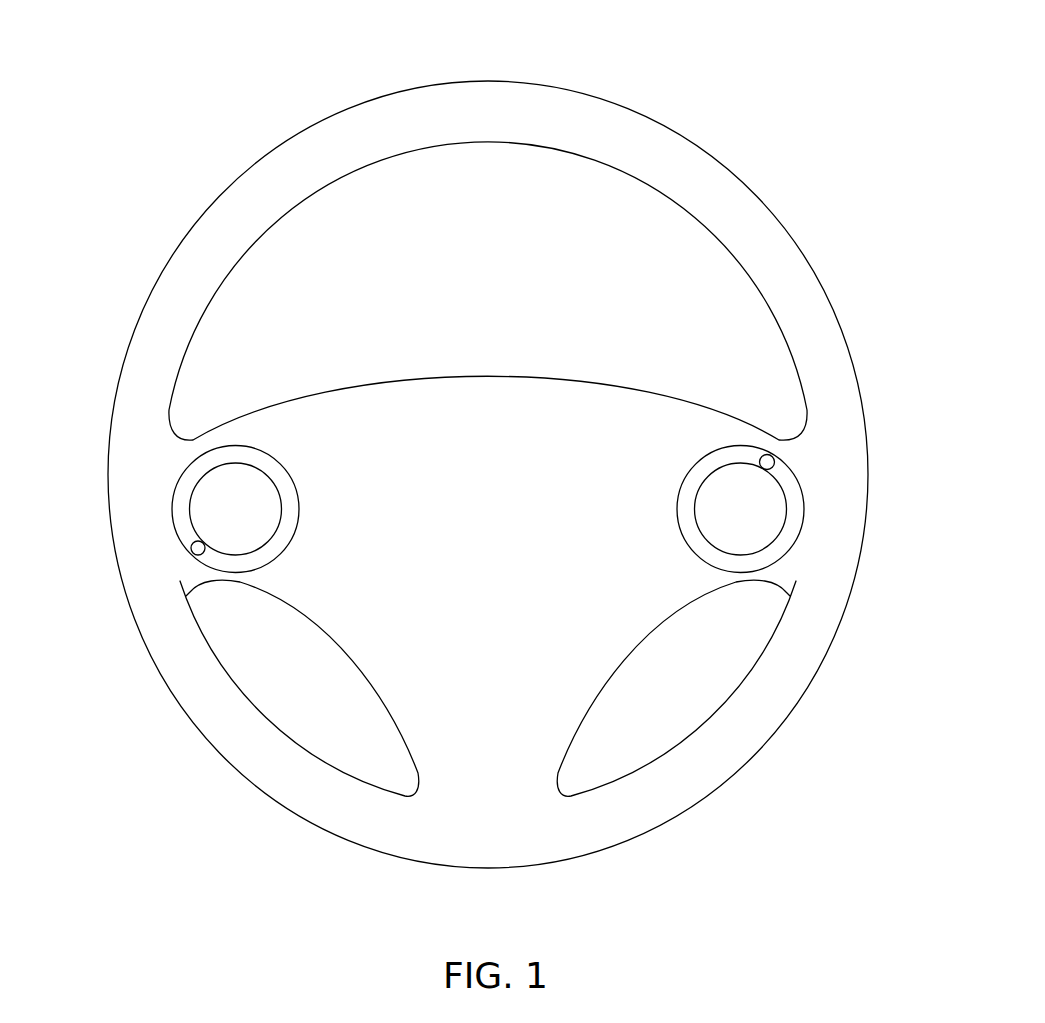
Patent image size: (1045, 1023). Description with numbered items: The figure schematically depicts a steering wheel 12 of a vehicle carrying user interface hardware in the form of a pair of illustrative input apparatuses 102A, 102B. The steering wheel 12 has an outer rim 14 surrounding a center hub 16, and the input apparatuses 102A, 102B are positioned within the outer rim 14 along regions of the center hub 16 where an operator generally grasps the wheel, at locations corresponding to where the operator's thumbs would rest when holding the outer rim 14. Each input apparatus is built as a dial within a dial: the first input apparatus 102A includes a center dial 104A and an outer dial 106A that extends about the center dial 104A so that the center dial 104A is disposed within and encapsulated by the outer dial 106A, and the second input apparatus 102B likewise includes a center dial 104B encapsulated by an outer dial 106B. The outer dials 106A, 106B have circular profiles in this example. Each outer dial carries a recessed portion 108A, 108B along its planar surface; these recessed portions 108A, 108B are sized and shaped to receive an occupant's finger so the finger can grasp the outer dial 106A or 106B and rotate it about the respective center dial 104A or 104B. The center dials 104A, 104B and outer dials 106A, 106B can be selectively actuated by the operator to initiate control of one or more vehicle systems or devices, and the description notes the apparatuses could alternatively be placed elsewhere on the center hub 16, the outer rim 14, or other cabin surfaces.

The steering wheel 12 is at (488, 441).
The outer rim 14 is at (330, 117).
The center hub 16 is at (503, 542).
The input apparatus 102A is at (299, 557).
The input apparatus 102B is at (676, 557).
The center dial 104A is at (285, 469).
The center dial 104B is at (718, 487).
The outer dial 106A is at (188, 481).
The outer dial 106B is at (788, 537).
The recessed portion 108A is at (191, 551).
The recessed portion 108B is at (776, 461).